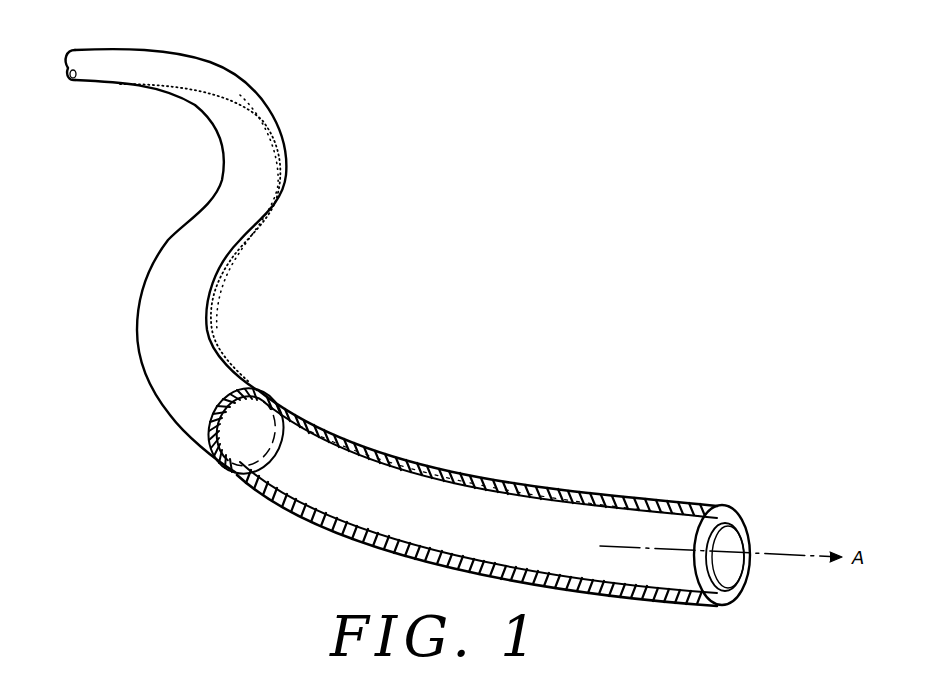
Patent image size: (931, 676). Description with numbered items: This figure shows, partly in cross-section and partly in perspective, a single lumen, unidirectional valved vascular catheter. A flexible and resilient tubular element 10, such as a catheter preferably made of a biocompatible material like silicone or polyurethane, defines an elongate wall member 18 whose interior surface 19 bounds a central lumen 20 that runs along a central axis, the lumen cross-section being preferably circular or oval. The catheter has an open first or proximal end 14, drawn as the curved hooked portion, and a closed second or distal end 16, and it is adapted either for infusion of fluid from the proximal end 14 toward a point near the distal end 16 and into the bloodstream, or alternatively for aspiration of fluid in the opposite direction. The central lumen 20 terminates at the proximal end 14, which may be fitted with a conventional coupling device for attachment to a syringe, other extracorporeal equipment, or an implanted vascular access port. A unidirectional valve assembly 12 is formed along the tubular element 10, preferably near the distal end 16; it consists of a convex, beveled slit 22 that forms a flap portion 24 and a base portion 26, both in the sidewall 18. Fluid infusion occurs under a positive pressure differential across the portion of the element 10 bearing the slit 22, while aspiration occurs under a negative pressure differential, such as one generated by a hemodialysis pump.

The tubular element 10 is at (286, 321).
The valve assembly 12 is at (569, 472).
The proximal end 14 is at (175, 45).
The distal end 16 is at (759, 466).
The elongate wall member 18 is at (175, 392).
The interior surface 19 is at (383, 470).
The central lumen 20 is at (331, 482).
The slit 22 is at (528, 494).
The flap portion 24 is at (527, 492).
The base portion 26 is at (590, 512).